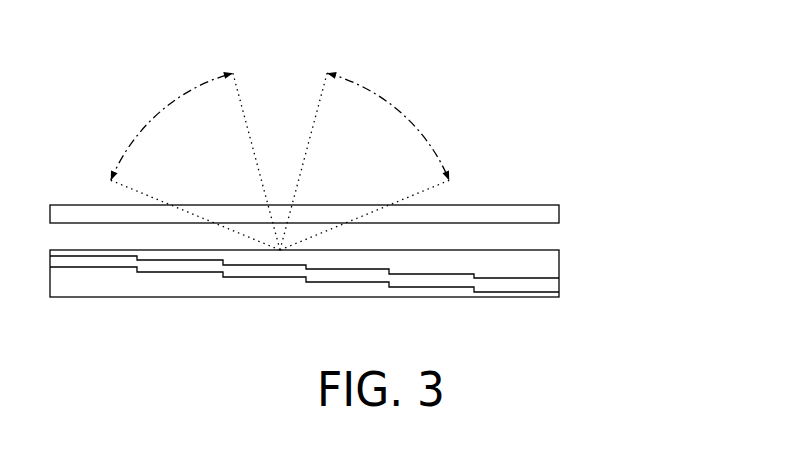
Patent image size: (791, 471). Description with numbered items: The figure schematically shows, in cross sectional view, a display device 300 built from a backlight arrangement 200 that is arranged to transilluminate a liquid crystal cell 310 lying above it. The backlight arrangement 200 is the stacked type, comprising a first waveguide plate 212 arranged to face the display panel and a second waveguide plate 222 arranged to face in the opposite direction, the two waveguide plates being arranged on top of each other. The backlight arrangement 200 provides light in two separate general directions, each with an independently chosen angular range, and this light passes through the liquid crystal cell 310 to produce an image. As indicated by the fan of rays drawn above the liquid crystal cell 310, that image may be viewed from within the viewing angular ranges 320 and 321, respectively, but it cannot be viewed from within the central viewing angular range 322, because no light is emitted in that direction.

The display device 300 is at (635, 172).
The liquid crystal cell 310 is at (559, 217).
The backlight arrangement 200 is at (350, 273).
The first waveguide plate 212 is at (539, 277).
The second waveguide plate 222 is at (116, 294).
The viewing angular range 320 is at (467, 157).
The viewing angular range 321 is at (214, 52).
The viewing angular range 322 is at (318, 72).